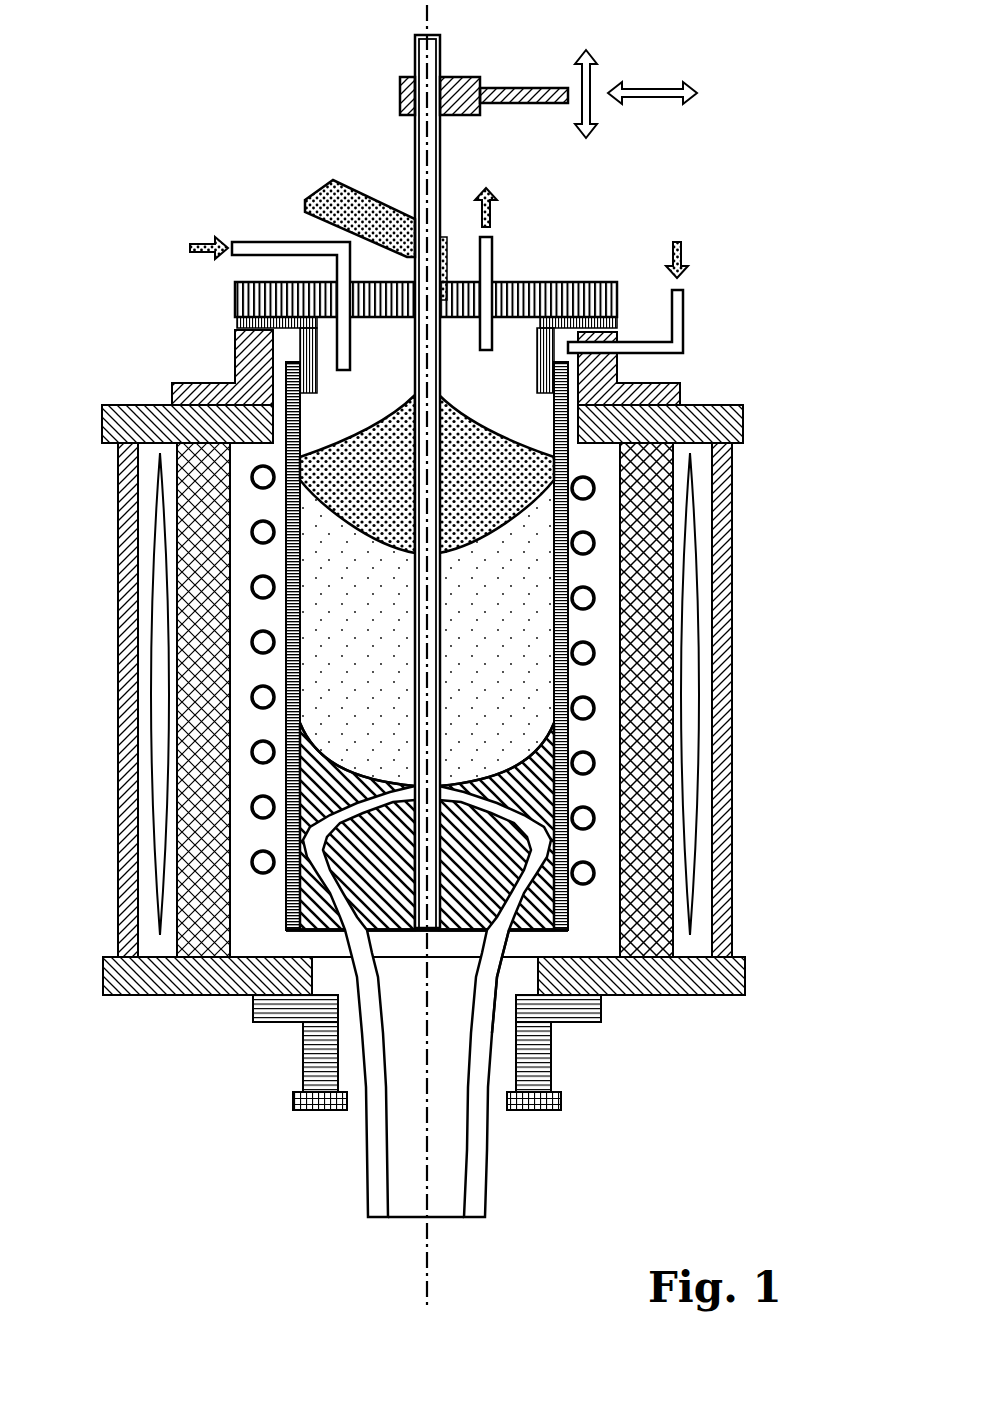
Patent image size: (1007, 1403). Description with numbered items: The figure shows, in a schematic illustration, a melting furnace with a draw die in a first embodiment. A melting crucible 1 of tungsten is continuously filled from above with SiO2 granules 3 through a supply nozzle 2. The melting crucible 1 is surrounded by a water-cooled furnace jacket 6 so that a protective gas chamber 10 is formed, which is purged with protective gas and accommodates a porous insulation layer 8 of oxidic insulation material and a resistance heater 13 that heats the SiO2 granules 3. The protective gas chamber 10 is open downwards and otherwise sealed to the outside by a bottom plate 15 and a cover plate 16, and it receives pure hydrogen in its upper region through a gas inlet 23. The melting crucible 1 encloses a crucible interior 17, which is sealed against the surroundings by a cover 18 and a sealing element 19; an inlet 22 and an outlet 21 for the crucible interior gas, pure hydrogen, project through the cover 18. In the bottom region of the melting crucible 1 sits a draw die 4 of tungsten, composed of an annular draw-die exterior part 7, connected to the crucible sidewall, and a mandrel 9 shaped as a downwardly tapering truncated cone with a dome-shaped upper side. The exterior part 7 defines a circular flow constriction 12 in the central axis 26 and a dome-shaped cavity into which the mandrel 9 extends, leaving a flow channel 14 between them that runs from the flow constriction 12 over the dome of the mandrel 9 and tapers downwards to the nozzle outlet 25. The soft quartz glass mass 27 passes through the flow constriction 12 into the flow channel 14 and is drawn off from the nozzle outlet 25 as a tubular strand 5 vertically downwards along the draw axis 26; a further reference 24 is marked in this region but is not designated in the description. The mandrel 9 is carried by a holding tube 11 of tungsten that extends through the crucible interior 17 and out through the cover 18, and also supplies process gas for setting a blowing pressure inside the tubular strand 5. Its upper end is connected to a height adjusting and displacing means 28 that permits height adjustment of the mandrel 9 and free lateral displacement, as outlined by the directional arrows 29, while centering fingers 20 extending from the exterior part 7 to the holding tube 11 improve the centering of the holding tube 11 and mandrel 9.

The melting crucible 1 is at (285, 568).
The supply nozzle 2 is at (362, 197).
The SiO2 granules 3 is at (493, 465).
The draw die 4 is at (511, 975).
The tubular strand 5 is at (473, 1168).
The furnace jacket 6 is at (731, 612).
The draw-die exterior part 7 is at (284, 927).
The insulation layer 8 is at (655, 893).
The mandrel 9 is at (338, 932).
The protective gas chamber 10 is at (612, 498).
The holding tube 11 is at (418, 53).
The flow constriction 12 is at (442, 771).
The resistance heater 13 is at (252, 640).
The flow channel 14 is at (300, 873).
The bottom plate 15 is at (655, 995).
The cover plate 16 is at (152, 425).
The crucible interior 17 is at (364, 355).
The cover 18 is at (570, 287).
The sealing element 19 is at (247, 317).
The centering fingers 20 is at (407, 778).
The outlet 21 is at (486, 257).
The inlet 22 is at (260, 248).
The gas inlet 23 is at (680, 323).
The tube interior 24 is at (405, 1118).
The nozzle outlet 25 is at (500, 937).
The central axis 26 is at (420, 1258).
The soft quartz glass mass 27 is at (376, 605).
The height adjusting and displacing means 28 is at (498, 88).
The directional arrows 29 is at (672, 83).